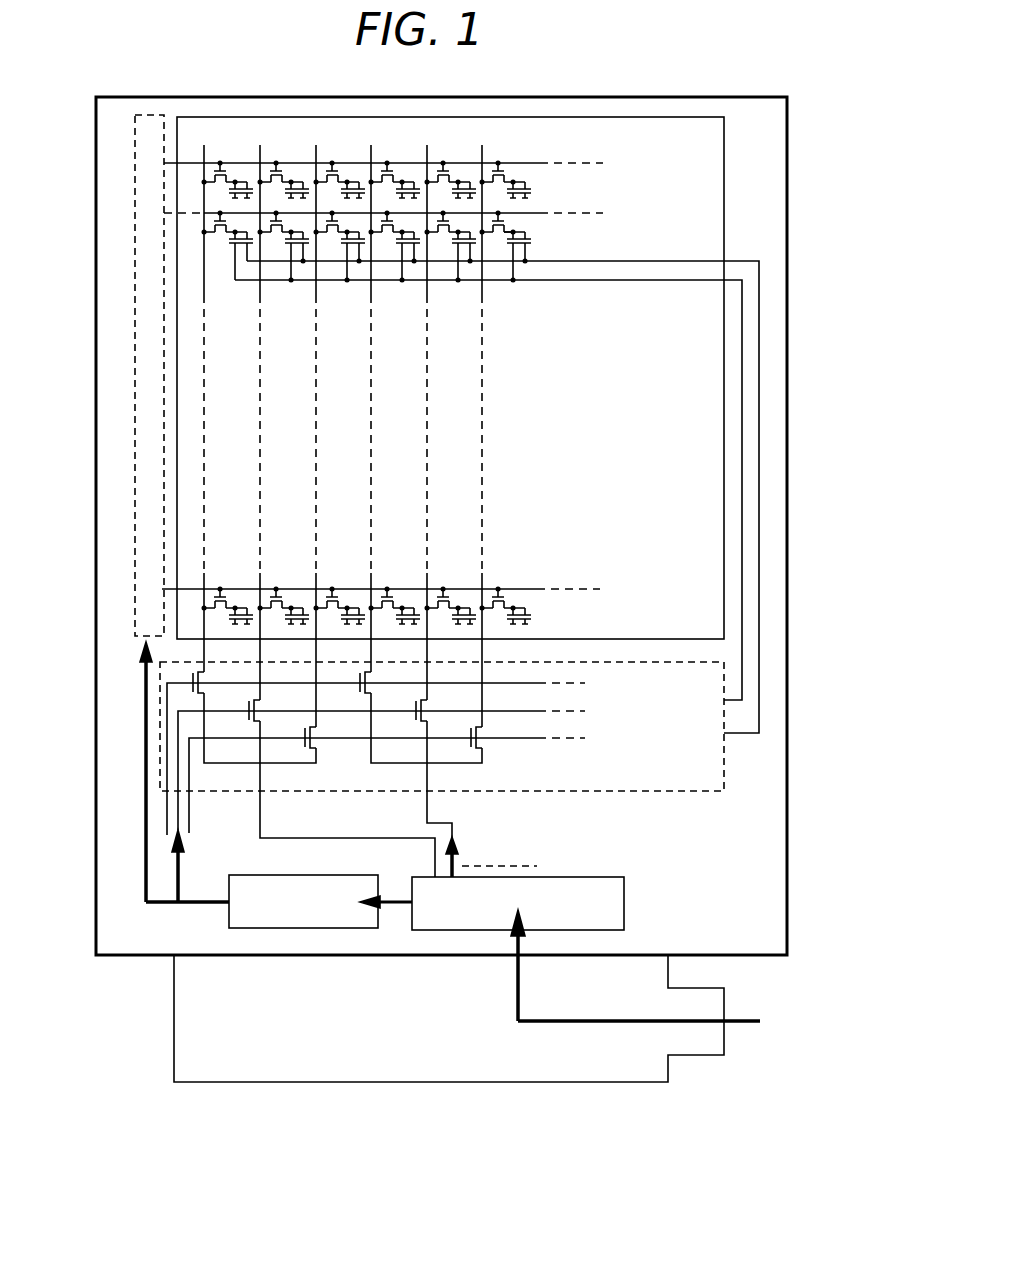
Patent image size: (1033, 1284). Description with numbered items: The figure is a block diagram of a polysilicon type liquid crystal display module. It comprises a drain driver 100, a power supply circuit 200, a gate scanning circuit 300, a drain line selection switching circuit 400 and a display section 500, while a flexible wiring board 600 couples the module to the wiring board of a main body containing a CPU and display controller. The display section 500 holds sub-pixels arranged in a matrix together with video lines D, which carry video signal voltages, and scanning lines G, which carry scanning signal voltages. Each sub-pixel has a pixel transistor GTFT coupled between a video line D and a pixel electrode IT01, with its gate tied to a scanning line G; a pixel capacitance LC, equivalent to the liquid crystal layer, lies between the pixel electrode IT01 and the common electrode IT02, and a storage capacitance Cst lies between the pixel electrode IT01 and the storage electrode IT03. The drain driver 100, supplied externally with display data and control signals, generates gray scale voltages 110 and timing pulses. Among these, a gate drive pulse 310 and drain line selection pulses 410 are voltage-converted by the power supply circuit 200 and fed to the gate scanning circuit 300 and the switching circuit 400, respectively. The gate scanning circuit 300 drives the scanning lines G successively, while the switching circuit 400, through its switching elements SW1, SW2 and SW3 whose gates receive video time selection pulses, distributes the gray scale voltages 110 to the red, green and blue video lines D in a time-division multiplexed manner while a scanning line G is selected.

The drain driver 100 is at (624, 900).
The gray scale voltages 110 is at (465, 852).
The power supply circuit 200 is at (320, 875).
The gate scanning circuit 300 is at (135, 578).
The gate drive pulse 310 is at (145, 840).
The drain line selection switching circuit 400 is at (693, 791).
The drain line selection pulses 410 is at (145, 883).
The display section 500 is at (718, 518).
The flexible wiring board 600 is at (389, 1082).
The pixel transistor GTFT is at (506, 176).
The storage capacitance Cst is at (531, 191).
The pixel capacitance LC is at (520, 282).
The pixel electrode IT01 is at (515, 235).
The common electrode IT02 is at (657, 282).
The storage electrode IT03 is at (662, 262).
The video lines D is at (482, 587).
The scanning lines G is at (537, 589).
The switching element SW1 is at (371, 677).
The switching element SW2 is at (425, 703).
The switching element SW3 is at (480, 730).